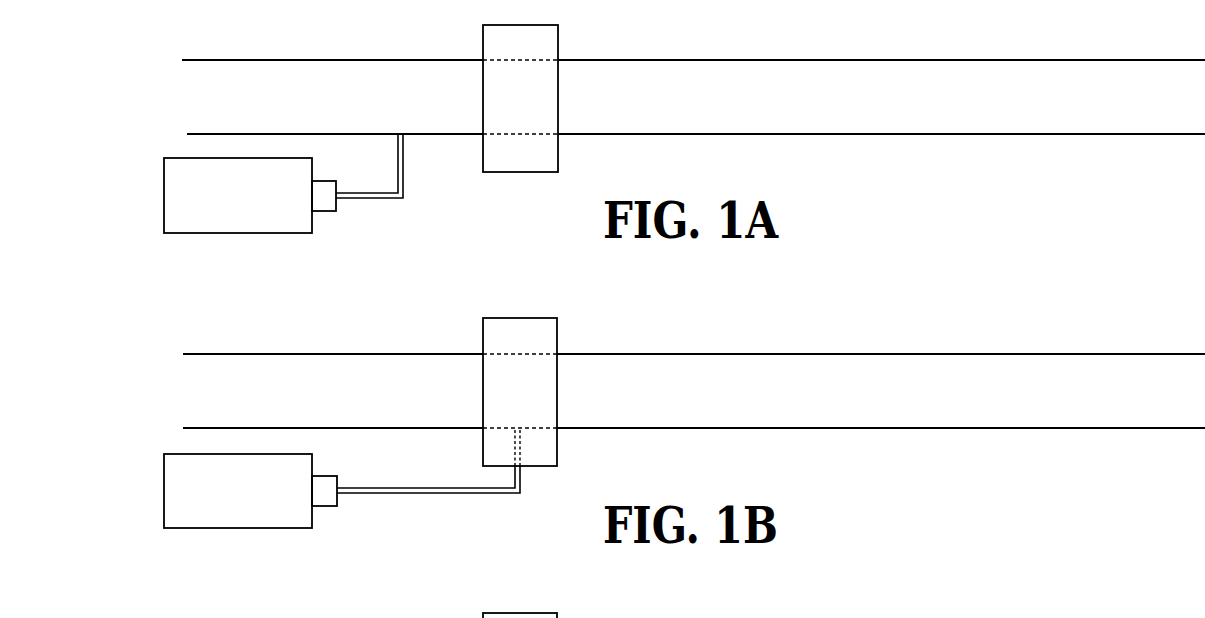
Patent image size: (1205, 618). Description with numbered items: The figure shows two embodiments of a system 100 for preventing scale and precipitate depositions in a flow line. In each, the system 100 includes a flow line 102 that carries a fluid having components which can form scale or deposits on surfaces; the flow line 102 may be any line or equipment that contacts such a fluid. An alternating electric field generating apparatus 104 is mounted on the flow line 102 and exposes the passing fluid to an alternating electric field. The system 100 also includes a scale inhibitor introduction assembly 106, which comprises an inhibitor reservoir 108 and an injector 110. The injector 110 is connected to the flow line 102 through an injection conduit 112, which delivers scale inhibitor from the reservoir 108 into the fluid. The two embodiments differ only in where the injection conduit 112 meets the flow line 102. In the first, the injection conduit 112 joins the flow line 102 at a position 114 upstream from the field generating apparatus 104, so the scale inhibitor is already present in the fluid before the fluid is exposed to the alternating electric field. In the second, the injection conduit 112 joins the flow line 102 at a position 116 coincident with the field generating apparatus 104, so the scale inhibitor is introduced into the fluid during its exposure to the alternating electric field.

In FIG. 1A, the system for preventing scale and precipitate depositions 100 is at (1049, 180).
In FIG. 1B, the system for preventing scale and precipitate depositions 100 is at (1049, 475).
In FIG. 1A, the flow line 102 is at (693, 97).
In FIG. 1B, the flow line 102 is at (694, 391).
In FIG. 1A, the alternating electric field generating apparatus 104 is at (520, 98).
In FIG. 1B, the alternating electric field generating apparatus 104 is at (520, 392).
In FIG. 1A, the scale inhibitor introduction assembly 106 is at (134, 195).
In FIG. 1B, the scale inhibitor introduction assembly 106 is at (134, 488).
In FIG. 1A, the inhibitor reservoir 108 is at (238, 195).
In FIG. 1B, the inhibitor reservoir 108 is at (238, 491).
In FIG. 1A, the injector 110 is at (322, 212).
In FIG. 1B, the injector 110 is at (322, 507).
In FIG. 1A, the injection conduit 112 is at (403, 198).
In FIG. 1B, the injection conduit 112 is at (527, 493).
In FIG. 1A, the position upstream from the field generating apparatus 114 is at (399, 127).
In FIG. 1B, the position coincident with the field generating apparatus 116 is at (515, 421).